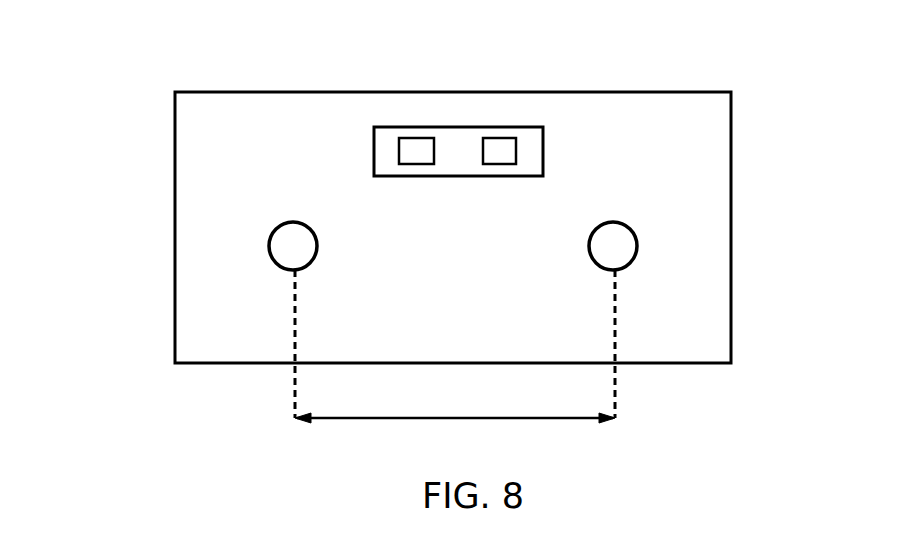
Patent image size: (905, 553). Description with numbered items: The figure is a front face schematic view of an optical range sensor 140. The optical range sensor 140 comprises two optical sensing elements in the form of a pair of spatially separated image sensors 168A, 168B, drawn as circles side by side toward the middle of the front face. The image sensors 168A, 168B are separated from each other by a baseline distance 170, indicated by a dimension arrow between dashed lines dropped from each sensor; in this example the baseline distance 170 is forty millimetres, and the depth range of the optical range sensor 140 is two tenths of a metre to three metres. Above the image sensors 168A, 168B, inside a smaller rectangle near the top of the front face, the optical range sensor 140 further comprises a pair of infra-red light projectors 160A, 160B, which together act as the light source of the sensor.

The optical range sensor 140 is at (134, 78).
The infra-red light projector 160A is at (417, 153).
The infra-red light projector 160B is at (497, 155).
The image sensor 168A is at (295, 247).
The image sensor 168B is at (608, 244).
The baseline distance 170 is at (377, 418).